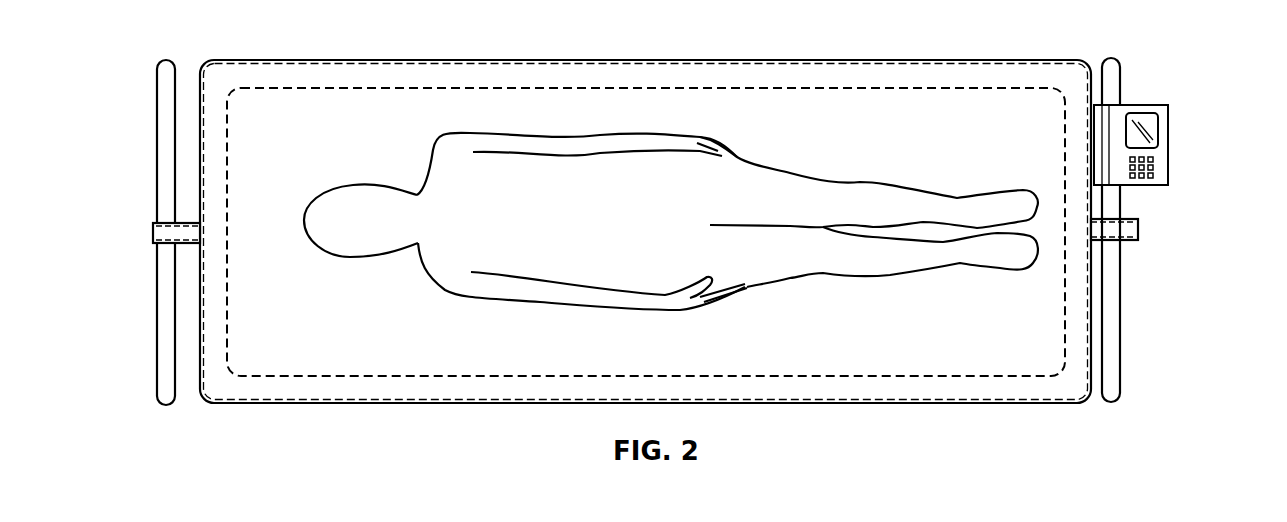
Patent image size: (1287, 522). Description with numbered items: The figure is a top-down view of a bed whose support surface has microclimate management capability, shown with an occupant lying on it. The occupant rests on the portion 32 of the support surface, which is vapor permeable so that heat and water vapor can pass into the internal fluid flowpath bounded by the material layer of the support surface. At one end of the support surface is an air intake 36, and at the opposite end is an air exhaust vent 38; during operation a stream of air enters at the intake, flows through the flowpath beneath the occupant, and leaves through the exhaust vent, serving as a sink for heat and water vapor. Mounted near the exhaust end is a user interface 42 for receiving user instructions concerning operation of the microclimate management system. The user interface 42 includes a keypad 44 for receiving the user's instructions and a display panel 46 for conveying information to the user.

The portion of the support surface 32 is at (369, 125).
The air intake 36 is at (168, 233).
The air exhaust vent 38 is at (1130, 228).
The user interface 42 is at (1108, 105).
The keypad 44 is at (1152, 167).
The display panel 46 is at (1143, 125).